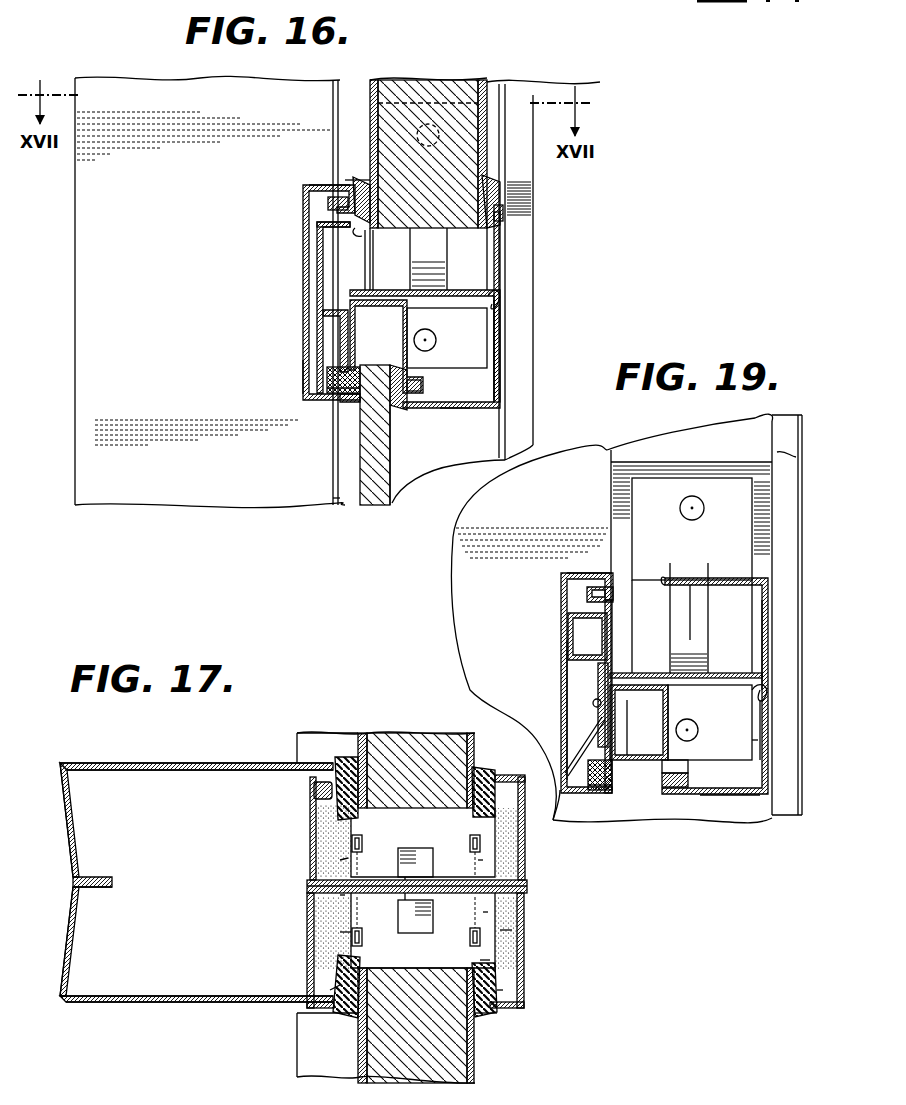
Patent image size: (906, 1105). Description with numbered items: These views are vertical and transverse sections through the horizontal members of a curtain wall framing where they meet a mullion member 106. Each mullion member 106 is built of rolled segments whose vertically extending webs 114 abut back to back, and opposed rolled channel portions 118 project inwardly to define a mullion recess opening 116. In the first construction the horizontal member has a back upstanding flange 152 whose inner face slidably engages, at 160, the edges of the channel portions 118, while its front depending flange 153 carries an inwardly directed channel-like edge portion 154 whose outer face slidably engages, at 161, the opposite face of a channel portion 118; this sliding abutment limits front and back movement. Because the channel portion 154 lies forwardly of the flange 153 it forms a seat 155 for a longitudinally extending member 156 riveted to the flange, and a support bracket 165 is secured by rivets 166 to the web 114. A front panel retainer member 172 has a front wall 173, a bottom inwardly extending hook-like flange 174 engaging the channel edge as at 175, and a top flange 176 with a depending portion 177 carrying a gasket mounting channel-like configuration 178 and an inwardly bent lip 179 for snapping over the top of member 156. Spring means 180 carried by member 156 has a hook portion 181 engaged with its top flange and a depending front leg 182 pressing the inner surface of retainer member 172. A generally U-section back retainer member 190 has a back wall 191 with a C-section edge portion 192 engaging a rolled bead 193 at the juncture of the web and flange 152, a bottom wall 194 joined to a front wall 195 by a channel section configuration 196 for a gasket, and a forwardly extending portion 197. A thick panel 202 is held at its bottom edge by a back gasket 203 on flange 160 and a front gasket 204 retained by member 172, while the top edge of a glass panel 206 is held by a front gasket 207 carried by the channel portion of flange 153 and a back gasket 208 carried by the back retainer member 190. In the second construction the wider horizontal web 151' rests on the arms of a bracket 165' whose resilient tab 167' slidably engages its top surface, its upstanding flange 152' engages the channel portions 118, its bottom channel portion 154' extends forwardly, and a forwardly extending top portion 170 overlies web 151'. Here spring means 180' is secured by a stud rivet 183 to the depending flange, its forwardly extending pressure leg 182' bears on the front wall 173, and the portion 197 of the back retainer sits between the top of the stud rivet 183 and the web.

In FIG. 16, the mullion member 106 is at (163, 90).
In FIG. 19, the mullion member 106 is at (455, 595).
In FIG. 17, the mullion member 106 is at (90, 760).
In FIG. 19, the web 114 is at (693, 437).
In FIG. 16, the mullion recess opening 116 is at (338, 96).
In FIG. 19, the mullion recess opening 116 is at (773, 421).
In FIG. 17, the channel portion 118 is at (497, 1013).
In FIG. 19, the horizontal web 151' is at (725, 680).
In FIG. 16, the back upstanding flange 152 is at (536, 307).
In FIG. 17, the back upstanding flange 152 is at (449, 891).
In FIG. 19, the vertical upstanding flange 152' is at (802, 645).
In FIG. 19, the front depending flange 153 is at (642, 758).
In FIG. 16, the channel-like edge portion 154 is at (301, 394).
In FIG. 19, the bottom channel portion 154' is at (620, 807).
In FIG. 17, the seat 155 is at (335, 817).
In FIG. 19, the longitudinally extending member 156 is at (598, 687).
In FIG. 16, the sliding engagement 160 is at (500, 220).
In FIG. 16, the sliding engagement 161 is at (330, 380).
In FIG. 17, the support bracket 165 is at (441, 883).
In FIG. 19, the bracket 165' is at (737, 575).
In FIG. 19, the rivet 166 is at (693, 508).
In FIG. 19, the resilient tab 167' is at (755, 656).
In FIG. 19, the top portion 170 is at (730, 565).
In FIG. 16, the front curtain wall panel retainer member 172 is at (300, 236).
In FIG. 19, the front curtain wall panel retainer member 172 is at (555, 656).
In FIG. 16, the front wall 173 is at (305, 360).
In FIG. 19, the front wall 173 is at (565, 631).
In FIG. 19, the hook-like flange 174 is at (560, 825).
In FIG. 16, the hook engagement 175 is at (352, 397).
In FIG. 19, the hook engagement 175 is at (613, 787).
In FIG. 16, the top flange 176 is at (306, 184).
In FIG. 19, the top flange 176 is at (565, 580).
In FIG. 16, the depending portion 177 is at (337, 205).
In FIG. 19, the depending portion 177 is at (590, 597).
In FIG. 16, the gasket mounting channel 178 is at (357, 193).
In FIG. 19, the gasket mounting channel 178 is at (617, 592).
In FIG. 16, the inwardly bent lip 179 is at (362, 240).
In FIG. 19, the inwardly bent lip 179 is at (600, 635).
In FIG. 16, the spring means 180 is at (297, 215).
In FIG. 19, the spring means 180' is at (560, 740).
In FIG. 16, the hook portion 181 is at (360, 237).
In FIG. 16, the depending front leg 182 is at (300, 307).
In FIG. 19, the pressure leg 182' is at (537, 710).
In FIG. 16, the stud rivet 183 is at (340, 322).
In FIG. 19, the stud rivet 183 is at (594, 702).
In FIG. 16, the back retainer member 190 is at (512, 380).
In FIG. 19, the back retainer member 190 is at (776, 791).
In FIG. 16, the back wall 191 is at (502, 357).
In FIG. 19, the back wall 191 is at (770, 770).
In FIG. 16, the C-section edge portion 192 is at (503, 330).
In FIG. 19, the C-section edge portion 192 is at (765, 718).
In FIG. 16, the rolled bead 193 is at (505, 296).
In FIG. 19, the rolled bead 193 is at (768, 688).
In FIG. 16, the bottom wall 194 is at (455, 409).
In FIG. 19, the bottom wall 194 is at (727, 796).
In FIG. 16, the front wall 195 is at (403, 325).
In FIG. 19, the front wall 195 is at (668, 753).
In FIG. 16, the channel section configuration 196 is at (421, 385).
In FIG. 19, the channel section configuration 196 is at (688, 779).
In FIG. 16, the longitudinal portion 197 is at (373, 306).
In FIG. 19, the longitudinal portion 197 is at (625, 735).
In FIG. 16, the panel 202 is at (413, 88).
In FIG. 17, the panel 202 is at (435, 1062).
In FIG. 16, the back gasket 203 is at (492, 190).
In FIG. 16, the front gasket 204 is at (365, 180).
In FIG. 16, the glass panel 206 is at (380, 498).
In FIG. 16, the front gasket 207 is at (350, 447).
In FIG. 16, the back gasket 208 is at (395, 412).